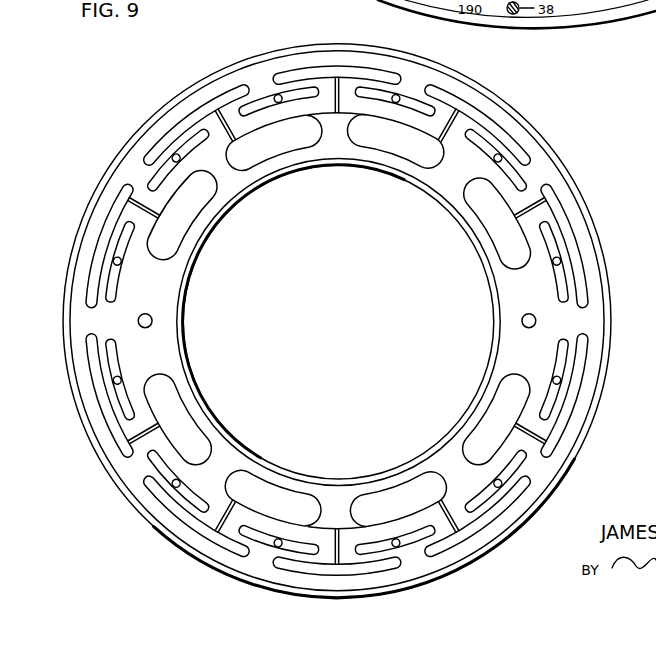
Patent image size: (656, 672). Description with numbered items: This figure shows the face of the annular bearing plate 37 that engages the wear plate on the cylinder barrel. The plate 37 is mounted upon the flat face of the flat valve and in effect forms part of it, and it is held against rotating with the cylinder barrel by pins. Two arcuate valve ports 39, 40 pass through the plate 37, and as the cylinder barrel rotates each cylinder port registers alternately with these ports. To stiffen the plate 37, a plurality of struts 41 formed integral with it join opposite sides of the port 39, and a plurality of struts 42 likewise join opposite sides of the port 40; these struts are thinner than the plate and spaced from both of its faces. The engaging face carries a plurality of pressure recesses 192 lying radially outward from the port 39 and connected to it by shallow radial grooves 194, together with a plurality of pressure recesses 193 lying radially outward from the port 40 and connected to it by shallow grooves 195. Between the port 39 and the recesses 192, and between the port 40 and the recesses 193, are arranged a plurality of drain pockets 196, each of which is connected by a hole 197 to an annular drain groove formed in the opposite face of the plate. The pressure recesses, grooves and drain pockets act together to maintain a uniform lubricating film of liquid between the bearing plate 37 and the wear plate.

The annular bearing plate 37 is at (573, 195).
The arcuate valve port 39 is at (160, 263).
The arcuate valve port 40 is at (153, 378).
The struts 41 is at (337, 136).
The struts 42 is at (213, 470).
The pressure recesses 192 is at (213, 100).
The pressure recesses 193 is at (105, 417).
The shallow radial grooves 194 is at (333, 102).
The shallow grooves 195 is at (128, 443).
The drain pockets 196 is at (254, 100).
The hole 197 is at (276, 96).